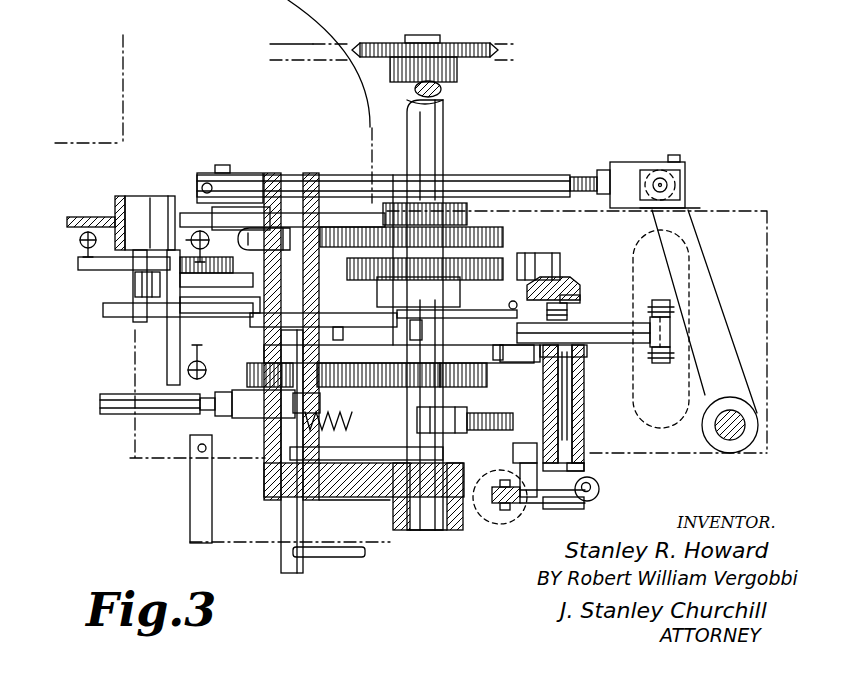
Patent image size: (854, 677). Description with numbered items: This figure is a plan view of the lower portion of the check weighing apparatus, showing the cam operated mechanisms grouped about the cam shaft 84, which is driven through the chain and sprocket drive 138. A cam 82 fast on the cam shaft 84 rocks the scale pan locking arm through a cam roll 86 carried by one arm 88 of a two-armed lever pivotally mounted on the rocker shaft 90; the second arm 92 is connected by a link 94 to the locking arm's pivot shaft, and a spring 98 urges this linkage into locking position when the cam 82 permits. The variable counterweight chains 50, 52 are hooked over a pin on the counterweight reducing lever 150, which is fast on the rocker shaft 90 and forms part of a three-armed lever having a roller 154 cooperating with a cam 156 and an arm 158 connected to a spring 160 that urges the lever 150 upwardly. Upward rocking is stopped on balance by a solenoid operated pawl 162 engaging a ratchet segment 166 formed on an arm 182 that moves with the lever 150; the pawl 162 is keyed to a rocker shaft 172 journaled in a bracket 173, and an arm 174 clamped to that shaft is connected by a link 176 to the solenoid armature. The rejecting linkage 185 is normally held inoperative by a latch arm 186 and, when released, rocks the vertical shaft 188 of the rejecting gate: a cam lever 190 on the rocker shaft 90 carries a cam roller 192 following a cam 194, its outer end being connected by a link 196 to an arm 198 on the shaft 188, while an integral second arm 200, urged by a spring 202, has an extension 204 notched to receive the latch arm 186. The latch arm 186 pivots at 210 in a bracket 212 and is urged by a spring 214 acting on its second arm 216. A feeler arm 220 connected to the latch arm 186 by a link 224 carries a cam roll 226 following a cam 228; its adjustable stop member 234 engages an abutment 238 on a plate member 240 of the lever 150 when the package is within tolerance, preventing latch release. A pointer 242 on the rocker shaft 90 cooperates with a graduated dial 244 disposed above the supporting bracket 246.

The variable counterweight chain 50 is at (655, 360).
The variable counterweight chain 52 is at (652, 308).
The cam 82 is at (577, 412).
The cam shaft 84 is at (445, 132).
The cam roll 86 is at (457, 417).
The arm of two-armed lever 88 is at (333, 452).
The rocker shaft 90 is at (280, 524).
The second arm of two-armed lever 92 is at (320, 405).
The link 94 is at (120, 415).
The spring 98 is at (352, 420).
The chain and sprocket drive 138 is at (330, 21).
The counterweight reducing lever 150 is at (670, 333).
The roller 154 is at (247, 375).
The cam 156 is at (487, 373).
The arm 158 is at (238, 312).
The spring 160 is at (188, 376).
The solenoid operated pawl 162 is at (580, 355).
The ratchet segment 166 is at (555, 380).
The rocker shaft 172 is at (568, 424).
The bracket 173 is at (585, 447).
The arm 174 is at (600, 485).
The link 176 is at (500, 508).
The arm 182 is at (375, 363).
The rejecting mechanism linkage 185 is at (519, 140).
The latch arm 186 is at (134, 285).
The vertical shaft 188 is at (740, 412).
The cam lever 190 is at (248, 212).
The cam roller 192 is at (240, 238).
The cam 194 is at (300, 230).
The link 196 is at (520, 176).
The arm 198 is at (703, 278).
The second arm 200 is at (318, 265).
The spring 202 is at (197, 230).
The extension 204 is at (170, 333).
The pivot 210 is at (163, 195).
The bracket 212 is at (113, 200).
The spring 214 is at (80, 240).
The second arm of latch member 216 is at (80, 268).
The cam operated feeler arm 220 is at (578, 290).
The link 224 is at (118, 308).
The cam roll 226 is at (560, 263).
The cam 228 is at (500, 258).
The stop member 234 is at (567, 303).
The abutment 238 is at (550, 320).
The plate member 240 is at (490, 312).
The dial arm or pointer 242 is at (332, 560).
The graduated arcuate dial 244 is at (214, 546).
The supporting bracket 246 is at (190, 458).